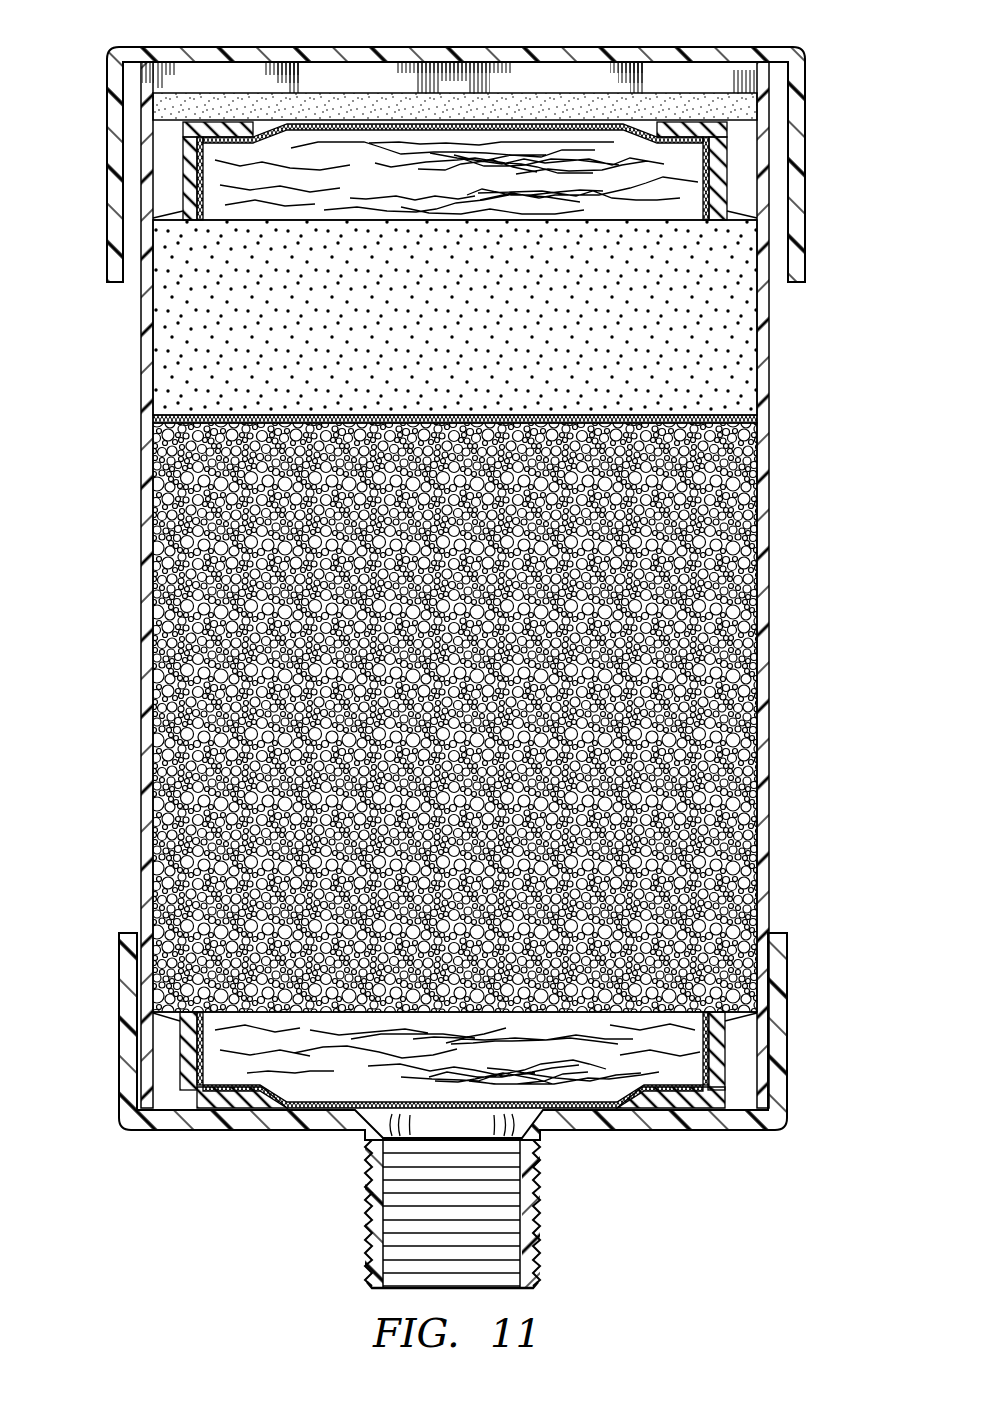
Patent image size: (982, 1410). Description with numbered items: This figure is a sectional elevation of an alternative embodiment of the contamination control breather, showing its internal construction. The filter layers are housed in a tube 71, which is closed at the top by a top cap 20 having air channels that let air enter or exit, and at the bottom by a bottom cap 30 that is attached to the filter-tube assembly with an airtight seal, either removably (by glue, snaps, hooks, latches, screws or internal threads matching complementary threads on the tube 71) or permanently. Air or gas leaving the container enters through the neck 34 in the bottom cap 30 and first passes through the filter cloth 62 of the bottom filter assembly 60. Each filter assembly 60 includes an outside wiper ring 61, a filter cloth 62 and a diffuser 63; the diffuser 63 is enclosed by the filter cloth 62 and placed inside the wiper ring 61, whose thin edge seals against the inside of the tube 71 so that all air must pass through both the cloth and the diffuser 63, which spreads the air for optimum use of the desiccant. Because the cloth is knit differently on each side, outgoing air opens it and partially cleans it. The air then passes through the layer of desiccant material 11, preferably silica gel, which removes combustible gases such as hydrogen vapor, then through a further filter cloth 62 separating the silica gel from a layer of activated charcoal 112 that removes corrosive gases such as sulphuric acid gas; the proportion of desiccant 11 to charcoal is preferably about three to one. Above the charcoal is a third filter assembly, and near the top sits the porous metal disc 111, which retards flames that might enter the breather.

The desiccant material 11 is at (703, 775).
The top cap 20 is at (805, 182).
The bottom cap 30 is at (787, 980).
The neck 34 is at (372, 1196).
The filter assembly 60 is at (727, 150).
The wiper ring 61 is at (188, 190).
The filter cloth 62 is at (355, 127).
The diffuser 63 is at (563, 147).
The tube 71 is at (770, 484).
The metal disc 111 is at (160, 105).
The activated charcoal 112 is at (722, 333).